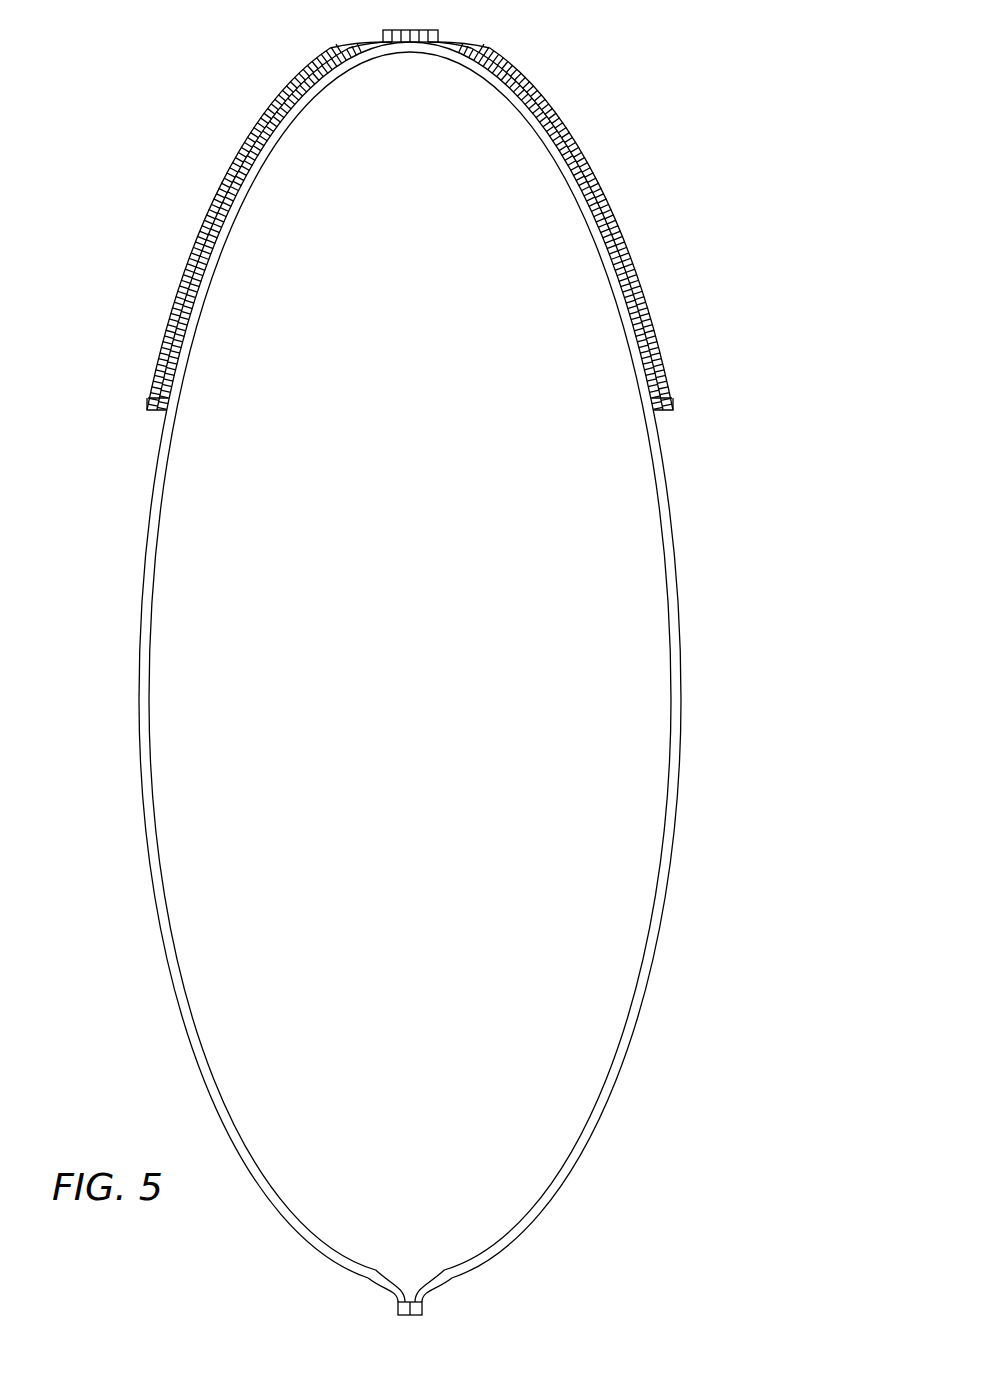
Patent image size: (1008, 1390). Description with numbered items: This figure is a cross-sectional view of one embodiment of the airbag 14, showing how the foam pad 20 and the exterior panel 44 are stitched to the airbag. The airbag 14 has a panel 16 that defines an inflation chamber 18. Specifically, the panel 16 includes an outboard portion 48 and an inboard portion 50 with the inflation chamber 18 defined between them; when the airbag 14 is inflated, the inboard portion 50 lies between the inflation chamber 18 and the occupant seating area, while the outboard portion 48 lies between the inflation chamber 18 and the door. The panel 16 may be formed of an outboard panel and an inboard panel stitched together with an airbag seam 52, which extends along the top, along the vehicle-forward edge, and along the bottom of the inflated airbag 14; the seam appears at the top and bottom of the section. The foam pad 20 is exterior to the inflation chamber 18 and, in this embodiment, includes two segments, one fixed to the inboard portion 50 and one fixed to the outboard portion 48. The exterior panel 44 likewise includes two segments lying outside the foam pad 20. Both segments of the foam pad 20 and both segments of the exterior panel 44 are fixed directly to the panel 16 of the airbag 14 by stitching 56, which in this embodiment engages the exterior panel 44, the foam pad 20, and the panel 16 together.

The airbag 14 is at (626, 48).
The panel 16 is at (137, 749).
The inflation chamber 18 is at (620, 683).
The foam pad 20 is at (196, 275).
The exterior panel 44 is at (217, 195).
The outboard portion 48 is at (678, 556).
The inboard portion 50 is at (144, 556).
The airbag seam 52 is at (440, 37).
The stitching 56 is at (152, 404).